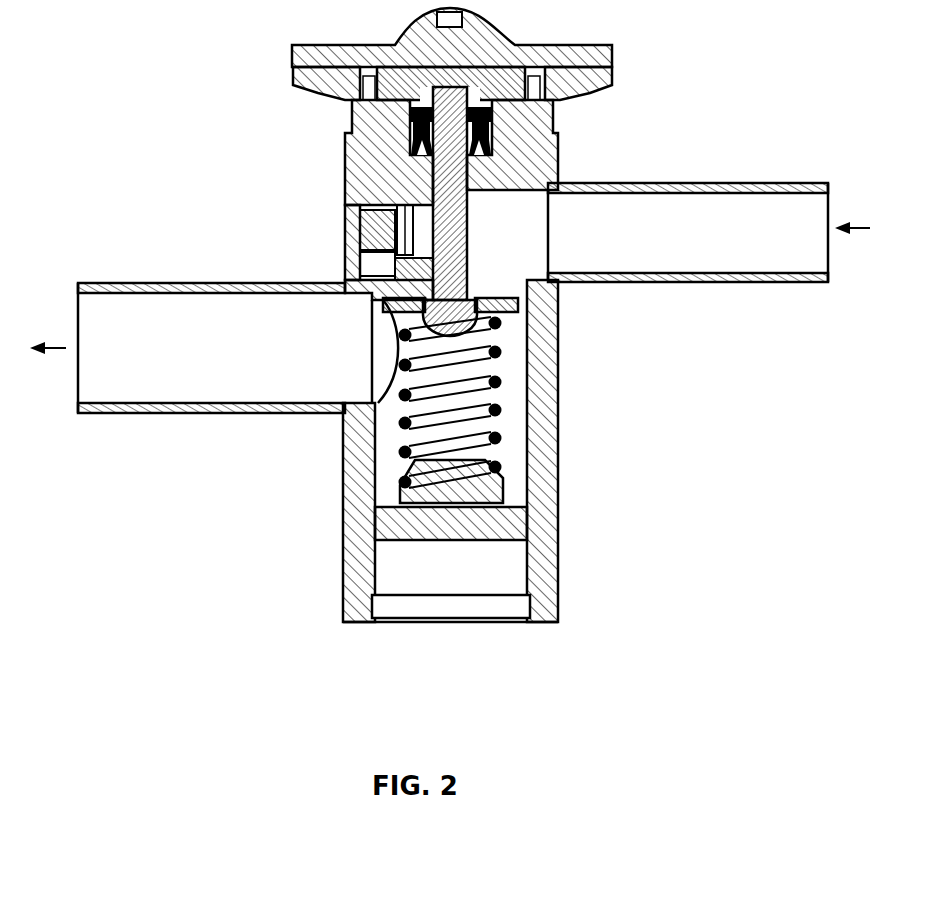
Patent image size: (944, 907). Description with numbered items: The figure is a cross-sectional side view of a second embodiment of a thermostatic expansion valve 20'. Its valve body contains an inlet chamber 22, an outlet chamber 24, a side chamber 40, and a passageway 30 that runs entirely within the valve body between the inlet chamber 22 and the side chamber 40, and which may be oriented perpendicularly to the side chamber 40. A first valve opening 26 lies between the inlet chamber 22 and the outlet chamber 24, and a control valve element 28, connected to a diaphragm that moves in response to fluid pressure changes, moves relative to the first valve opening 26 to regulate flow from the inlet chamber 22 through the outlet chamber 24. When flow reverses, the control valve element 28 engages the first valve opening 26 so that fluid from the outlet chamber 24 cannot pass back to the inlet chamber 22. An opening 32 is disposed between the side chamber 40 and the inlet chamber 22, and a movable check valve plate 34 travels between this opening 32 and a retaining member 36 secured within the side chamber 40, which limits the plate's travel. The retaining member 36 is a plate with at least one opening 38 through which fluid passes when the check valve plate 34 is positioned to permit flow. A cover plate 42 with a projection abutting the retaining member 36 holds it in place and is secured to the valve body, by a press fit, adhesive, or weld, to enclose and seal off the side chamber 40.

The thermostatic expansion valve 20' is at (450, 315).
The inlet chamber 22 is at (537, 235).
The outlet chamber 24 is at (388, 381).
The first valve opening 26 is at (358, 297).
The control valve element 28 is at (467, 218).
The passageway 30 is at (388, 275).
The opening 32 is at (470, 259).
The check valve plate 34 is at (470, 266).
The retaining member 36 is at (348, 204).
The opening 38 is at (390, 215).
The side chamber 40 is at (370, 258).
The cover plate 42 is at (410, 246).